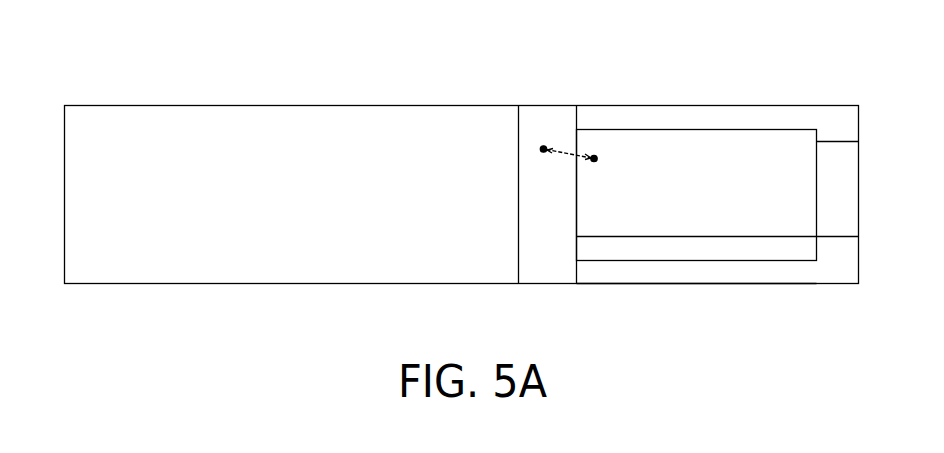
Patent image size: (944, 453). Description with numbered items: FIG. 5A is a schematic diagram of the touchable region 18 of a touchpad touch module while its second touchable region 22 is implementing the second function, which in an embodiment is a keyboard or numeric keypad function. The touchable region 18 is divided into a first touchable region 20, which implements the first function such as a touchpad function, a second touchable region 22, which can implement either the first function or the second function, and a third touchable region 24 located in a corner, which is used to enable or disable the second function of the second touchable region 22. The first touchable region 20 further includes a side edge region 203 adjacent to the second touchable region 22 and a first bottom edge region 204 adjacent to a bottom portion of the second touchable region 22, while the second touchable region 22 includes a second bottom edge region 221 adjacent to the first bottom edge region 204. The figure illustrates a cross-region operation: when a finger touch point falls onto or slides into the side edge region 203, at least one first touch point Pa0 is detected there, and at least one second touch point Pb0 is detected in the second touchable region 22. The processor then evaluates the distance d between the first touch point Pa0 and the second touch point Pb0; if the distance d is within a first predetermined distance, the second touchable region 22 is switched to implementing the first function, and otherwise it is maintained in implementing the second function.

The touchable region 18 is at (374, 105).
The first touchable region 20 is at (453, 119).
The second touchable region 22 is at (743, 143).
The third touchable region 24 is at (835, 120).
The side edge region 203 is at (552, 272).
The first bottom edge region 204 is at (663, 272).
The second bottom edge region 221 is at (750, 250).
The first touch point Pa0 is at (543, 146).
The second touch point Pb0 is at (595, 155).
The distance d is at (567, 151).